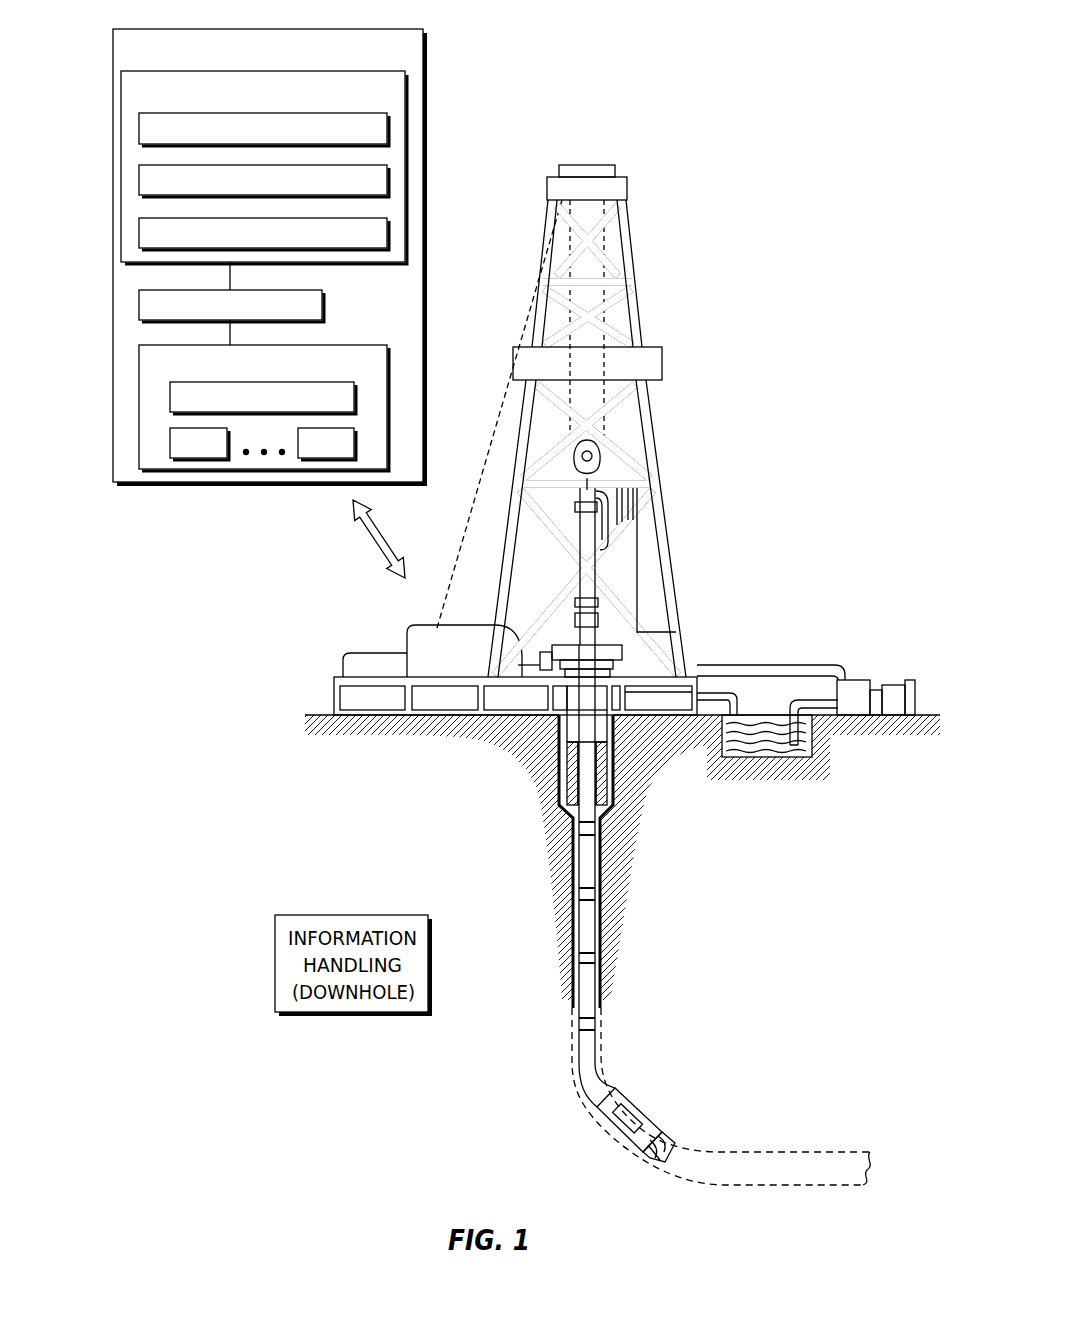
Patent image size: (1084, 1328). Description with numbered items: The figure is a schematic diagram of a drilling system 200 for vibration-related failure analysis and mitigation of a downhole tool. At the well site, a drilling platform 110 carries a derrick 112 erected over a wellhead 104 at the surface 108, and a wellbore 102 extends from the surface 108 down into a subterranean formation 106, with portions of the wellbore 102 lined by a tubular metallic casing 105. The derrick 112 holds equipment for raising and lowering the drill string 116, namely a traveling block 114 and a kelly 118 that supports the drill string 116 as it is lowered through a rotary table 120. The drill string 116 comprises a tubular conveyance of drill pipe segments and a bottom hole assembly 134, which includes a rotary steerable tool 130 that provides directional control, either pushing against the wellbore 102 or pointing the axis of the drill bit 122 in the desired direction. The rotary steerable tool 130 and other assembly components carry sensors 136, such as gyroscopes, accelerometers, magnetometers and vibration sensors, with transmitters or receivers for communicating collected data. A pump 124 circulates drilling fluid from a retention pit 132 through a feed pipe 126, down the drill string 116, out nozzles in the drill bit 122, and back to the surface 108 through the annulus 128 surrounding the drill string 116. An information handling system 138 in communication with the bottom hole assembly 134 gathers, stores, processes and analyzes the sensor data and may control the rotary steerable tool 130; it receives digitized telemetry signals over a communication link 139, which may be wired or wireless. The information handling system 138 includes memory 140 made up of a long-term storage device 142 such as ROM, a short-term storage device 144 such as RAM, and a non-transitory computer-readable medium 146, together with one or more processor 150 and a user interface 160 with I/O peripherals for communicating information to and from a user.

The information handling system 138 is at (234, 243).
The memory 140 is at (225, 158).
The long-term storage device 142 is at (139, 128).
The short-term storage device 144 is at (139, 180).
The non-transitory computer-readable medium 146 is at (139, 233).
The processor 150 is at (139, 305).
The user interface 160 is at (139, 385).
The communication link 139 is at (372, 542).
The drilling system 200 is at (844, 256).
The derrick 112 is at (638, 297).
The traveling block 114 is at (603, 458).
The kelly 118 is at (587, 530).
The rotary table 120 is at (620, 637).
The wellhead 104 is at (632, 668).
The drilling platform 110 is at (333, 690).
The feed pipe 126 is at (793, 665).
The pump 124 is at (858, 680).
The surface 108 is at (922, 715).
The retention pit 132 is at (763, 748).
The annulus 128 is at (575, 890).
The wellbore 102 is at (601, 888).
The casing 105 is at (600, 955).
The drill string 116 is at (595, 875).
The bottom hole assembly 134 is at (622, 1076).
The rotary steerable tool 130 is at (630, 1123).
The sensors 136 is at (636, 1113).
The drill bit 122 is at (670, 1137).
The subterranean formation 106 is at (783, 979).